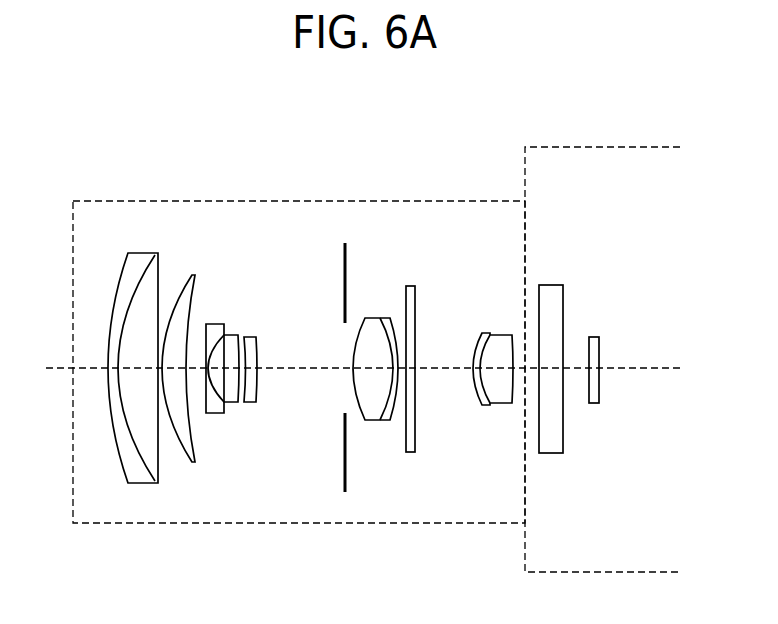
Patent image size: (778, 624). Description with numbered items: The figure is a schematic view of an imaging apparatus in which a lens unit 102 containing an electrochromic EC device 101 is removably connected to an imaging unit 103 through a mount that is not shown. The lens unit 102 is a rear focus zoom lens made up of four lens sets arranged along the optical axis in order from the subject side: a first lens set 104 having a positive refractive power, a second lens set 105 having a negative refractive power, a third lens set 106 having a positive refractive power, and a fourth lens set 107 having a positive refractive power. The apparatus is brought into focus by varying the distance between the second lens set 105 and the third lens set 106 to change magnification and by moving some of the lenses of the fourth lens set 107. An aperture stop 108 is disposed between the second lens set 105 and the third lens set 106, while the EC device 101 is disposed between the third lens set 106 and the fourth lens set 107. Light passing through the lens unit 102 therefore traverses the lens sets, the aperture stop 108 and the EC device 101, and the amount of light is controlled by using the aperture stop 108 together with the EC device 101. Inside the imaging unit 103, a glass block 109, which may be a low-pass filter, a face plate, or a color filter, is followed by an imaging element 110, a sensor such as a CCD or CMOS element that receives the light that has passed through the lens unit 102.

The EC device 101 is at (411, 286).
The lens unit 102 is at (96, 196).
The imaging unit 103 is at (589, 136).
The first lens set 104 is at (198, 235).
The second lens set 105 is at (257, 298).
The third lens set 106 is at (397, 296).
The fourth lens set 107 is at (514, 308).
The aperture stop 108 is at (344, 268).
The glass block 109 is at (553, 285).
The imaging element 110 is at (599, 345).